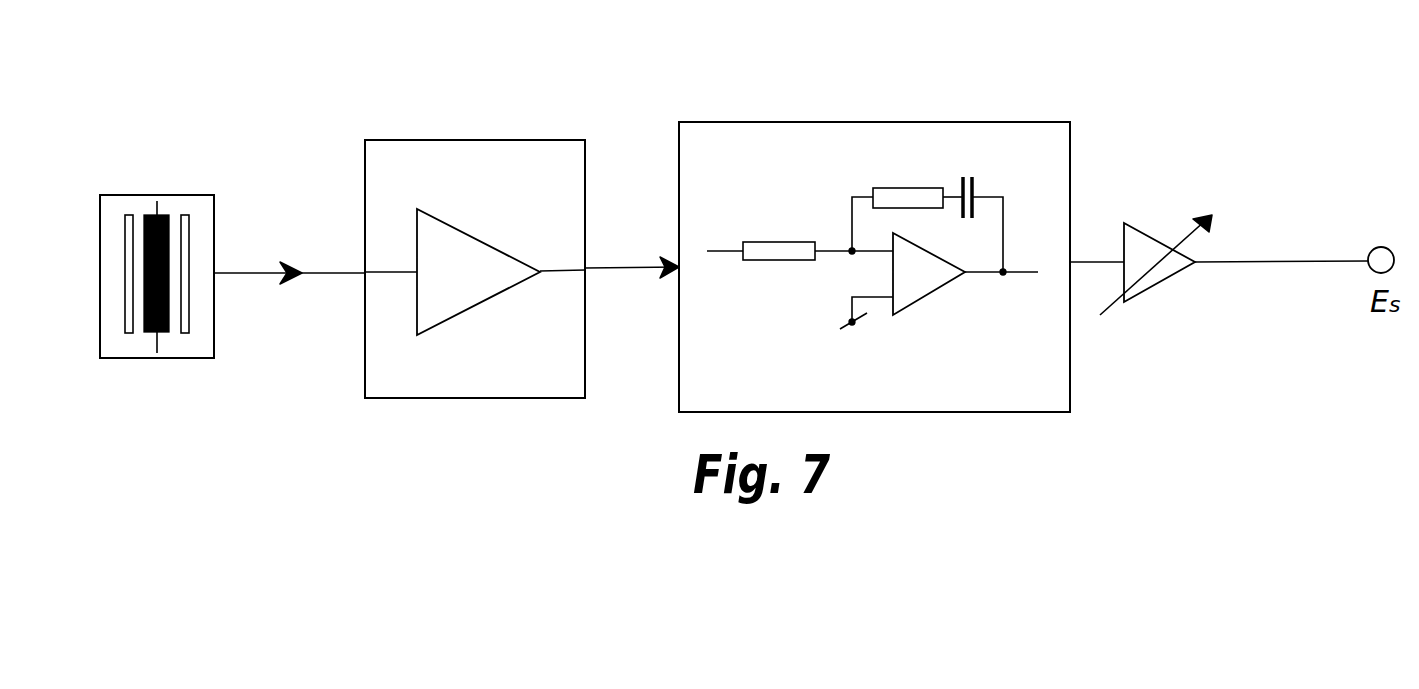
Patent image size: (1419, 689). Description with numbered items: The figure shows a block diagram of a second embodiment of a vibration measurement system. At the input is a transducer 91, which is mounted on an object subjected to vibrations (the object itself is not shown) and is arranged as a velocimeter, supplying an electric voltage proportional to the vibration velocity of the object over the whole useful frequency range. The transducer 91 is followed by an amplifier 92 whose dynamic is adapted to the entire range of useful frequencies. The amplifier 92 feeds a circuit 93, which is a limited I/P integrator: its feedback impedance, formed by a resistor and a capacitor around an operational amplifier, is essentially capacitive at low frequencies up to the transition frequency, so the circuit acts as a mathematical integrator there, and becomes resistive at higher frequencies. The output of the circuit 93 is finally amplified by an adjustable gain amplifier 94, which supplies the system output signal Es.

The transducer 91 is at (133, 193).
The amplifier 92 is at (418, 140).
The circuit 93 is at (862, 122).
The adjustable gain amplifier 94 is at (1143, 230).